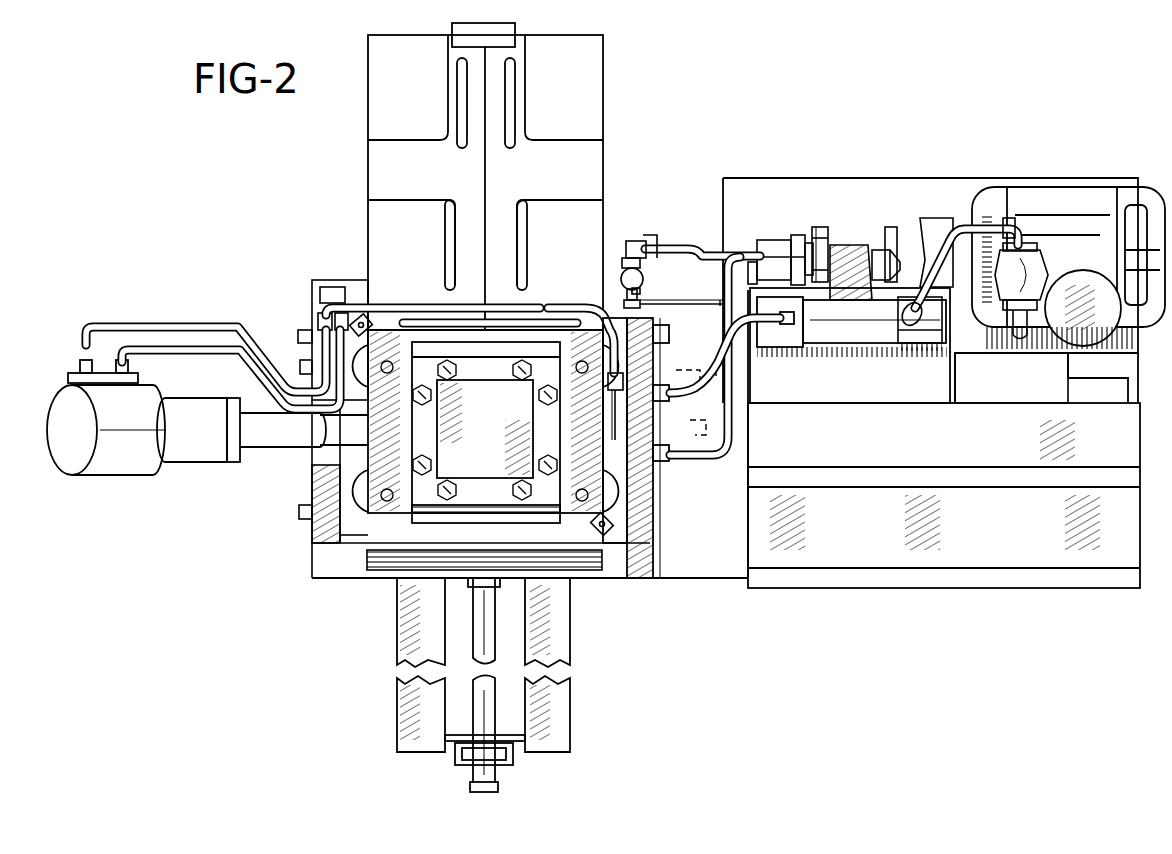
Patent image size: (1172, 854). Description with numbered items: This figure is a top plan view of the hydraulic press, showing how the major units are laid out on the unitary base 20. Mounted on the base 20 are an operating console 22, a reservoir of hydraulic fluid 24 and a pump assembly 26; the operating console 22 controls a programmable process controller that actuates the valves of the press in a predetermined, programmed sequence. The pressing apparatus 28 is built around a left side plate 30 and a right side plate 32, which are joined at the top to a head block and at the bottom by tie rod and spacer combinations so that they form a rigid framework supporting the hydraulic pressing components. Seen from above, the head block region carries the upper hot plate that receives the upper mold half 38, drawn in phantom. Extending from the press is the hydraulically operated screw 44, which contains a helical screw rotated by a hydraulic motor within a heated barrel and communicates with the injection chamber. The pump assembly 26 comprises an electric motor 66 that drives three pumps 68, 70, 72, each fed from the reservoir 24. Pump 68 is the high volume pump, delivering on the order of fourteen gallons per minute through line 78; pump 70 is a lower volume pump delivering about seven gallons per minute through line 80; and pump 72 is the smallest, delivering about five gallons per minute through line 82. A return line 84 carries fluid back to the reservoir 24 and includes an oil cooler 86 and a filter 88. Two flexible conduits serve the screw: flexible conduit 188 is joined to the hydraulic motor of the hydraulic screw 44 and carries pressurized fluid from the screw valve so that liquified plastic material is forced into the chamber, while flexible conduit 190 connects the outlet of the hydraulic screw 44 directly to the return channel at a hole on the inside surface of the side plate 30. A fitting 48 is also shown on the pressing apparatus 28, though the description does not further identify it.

The unitary base 20 is at (704, 562).
The operating console 22 is at (980, 553).
The reservoir of hydraulic fluid 24 is at (1034, 400).
The pump assembly 26 is at (940, 200).
The pressing apparatus 28 is at (300, 272).
The left side plate 30 is at (642, 505).
The right side plate 32 is at (312, 497).
The upper mold half 38 is at (502, 431).
The hydraulically operated screw 44 is at (62, 405).
The fitting 48 is at (362, 318).
The electric motor 66 is at (1043, 193).
The pump 68 is at (850, 237).
The pump 70 is at (812, 235).
The pump 72 is at (764, 242).
The line 78 is at (733, 392).
The line 80 is at (680, 303).
The line 82 is at (668, 250).
The return line 84 is at (735, 370).
The oil cooler 86 is at (848, 330).
The filter 88 is at (1036, 260).
The flexible conduit 188 is at (160, 356).
The flexible conduit 190 is at (146, 333).